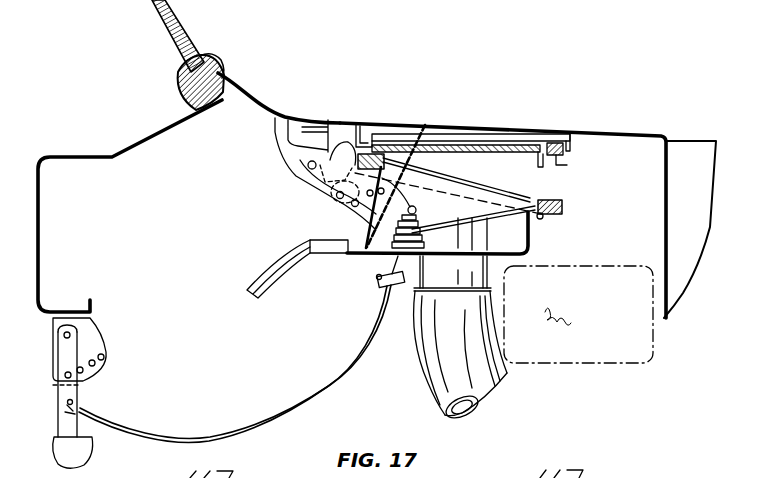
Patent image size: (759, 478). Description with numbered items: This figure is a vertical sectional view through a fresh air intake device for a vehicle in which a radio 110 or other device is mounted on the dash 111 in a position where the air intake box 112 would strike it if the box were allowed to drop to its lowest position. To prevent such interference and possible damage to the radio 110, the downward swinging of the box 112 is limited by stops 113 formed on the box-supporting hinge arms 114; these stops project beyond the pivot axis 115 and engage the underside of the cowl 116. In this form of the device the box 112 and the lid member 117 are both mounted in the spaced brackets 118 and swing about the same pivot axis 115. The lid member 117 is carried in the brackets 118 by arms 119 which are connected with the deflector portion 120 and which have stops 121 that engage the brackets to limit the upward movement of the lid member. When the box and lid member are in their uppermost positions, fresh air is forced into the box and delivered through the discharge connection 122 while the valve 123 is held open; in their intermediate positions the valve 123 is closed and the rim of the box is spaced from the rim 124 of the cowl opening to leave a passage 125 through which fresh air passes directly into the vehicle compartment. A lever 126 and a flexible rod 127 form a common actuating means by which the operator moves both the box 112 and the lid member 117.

The radio 110 is at (599, 267).
The dash 111 is at (675, 229).
The air intake box 112 is at (535, 240).
The stops 113 is at (273, 128).
The box-supporting hinge arms 114 is at (318, 195).
The pivot axis 115 is at (307, 167).
The cowl 116 is at (258, 107).
The lid member 117 is at (487, 113).
The spaced brackets 118 is at (331, 123).
The arms 119 is at (341, 206).
The deflector portion 120 is at (418, 163).
The stops 121 is at (366, 122).
The discharge connection 122 is at (425, 362).
The valve 123 is at (443, 216).
The rim of the cowl opening 124 is at (560, 158).
The passage 125 is at (548, 183).
The lever 126 is at (65, 420).
The flexible rod 127 is at (263, 419).